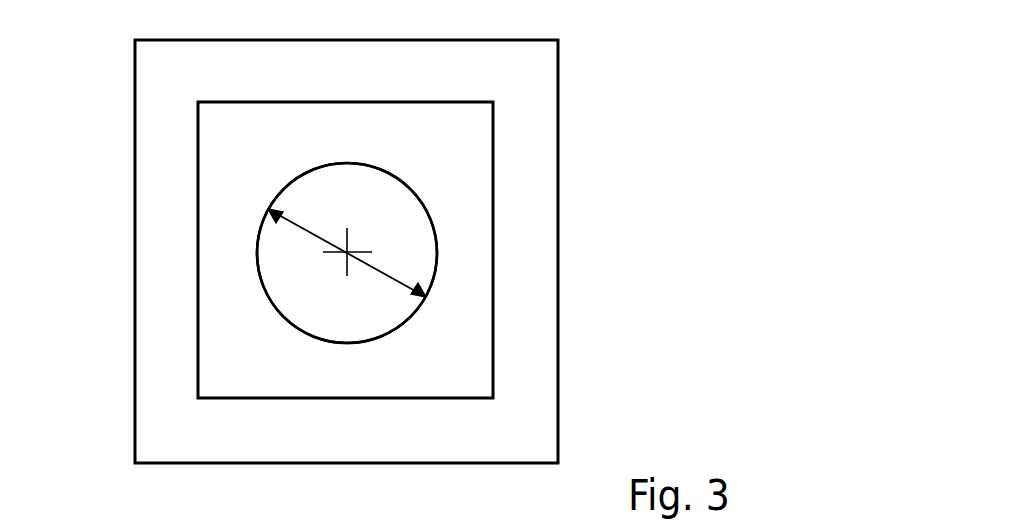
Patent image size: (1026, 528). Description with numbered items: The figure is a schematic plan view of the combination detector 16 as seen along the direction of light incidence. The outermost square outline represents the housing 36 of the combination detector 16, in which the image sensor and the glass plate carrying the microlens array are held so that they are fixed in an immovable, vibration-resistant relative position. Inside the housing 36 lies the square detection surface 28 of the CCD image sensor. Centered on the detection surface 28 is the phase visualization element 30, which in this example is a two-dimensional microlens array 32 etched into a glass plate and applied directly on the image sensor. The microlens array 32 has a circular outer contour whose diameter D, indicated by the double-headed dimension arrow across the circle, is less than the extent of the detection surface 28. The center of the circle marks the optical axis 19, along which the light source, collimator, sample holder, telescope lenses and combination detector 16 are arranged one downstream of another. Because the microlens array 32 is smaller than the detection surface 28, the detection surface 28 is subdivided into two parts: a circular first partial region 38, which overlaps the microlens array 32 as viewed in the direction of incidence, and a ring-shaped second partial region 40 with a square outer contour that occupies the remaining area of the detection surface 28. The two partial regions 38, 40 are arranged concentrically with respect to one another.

The combination detector 16 is at (611, 129).
The optical axis 19 is at (349, 252).
The detection surface 28 is at (198, 151).
The phase visualization element 30 is at (478, 253).
The microlens array 32 is at (437, 228).
The housing 36 is at (558, 316).
The first partial region 38 is at (296, 282).
The second partial region 40 is at (218, 350).
The diameter D is at (304, 221).